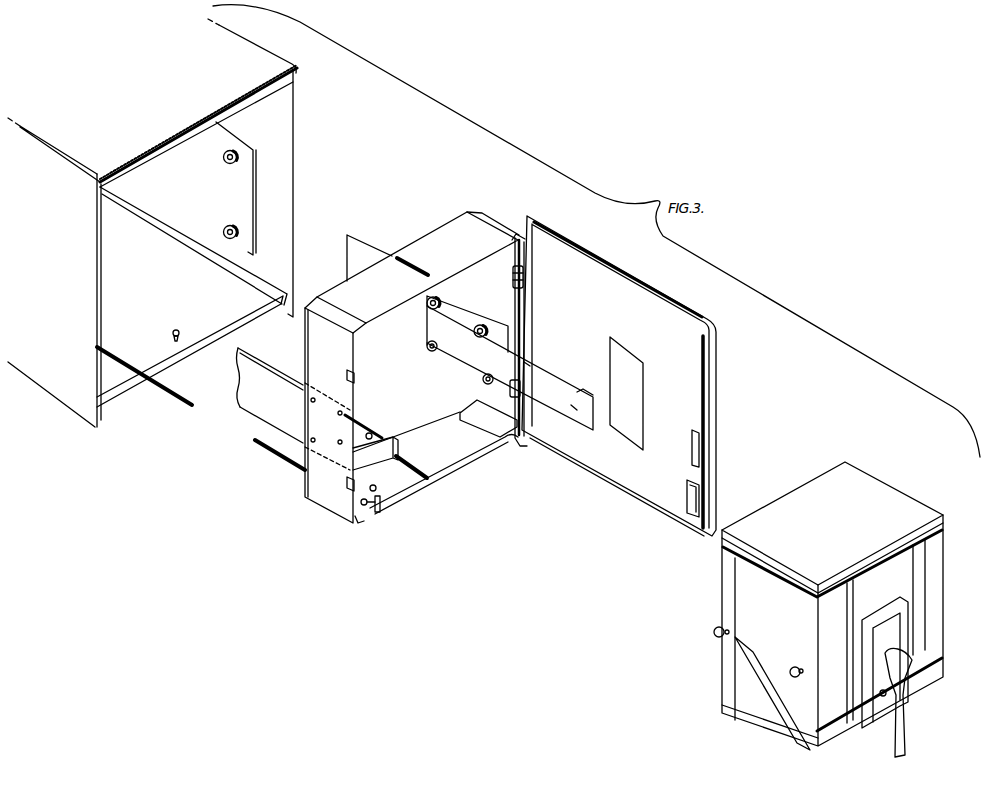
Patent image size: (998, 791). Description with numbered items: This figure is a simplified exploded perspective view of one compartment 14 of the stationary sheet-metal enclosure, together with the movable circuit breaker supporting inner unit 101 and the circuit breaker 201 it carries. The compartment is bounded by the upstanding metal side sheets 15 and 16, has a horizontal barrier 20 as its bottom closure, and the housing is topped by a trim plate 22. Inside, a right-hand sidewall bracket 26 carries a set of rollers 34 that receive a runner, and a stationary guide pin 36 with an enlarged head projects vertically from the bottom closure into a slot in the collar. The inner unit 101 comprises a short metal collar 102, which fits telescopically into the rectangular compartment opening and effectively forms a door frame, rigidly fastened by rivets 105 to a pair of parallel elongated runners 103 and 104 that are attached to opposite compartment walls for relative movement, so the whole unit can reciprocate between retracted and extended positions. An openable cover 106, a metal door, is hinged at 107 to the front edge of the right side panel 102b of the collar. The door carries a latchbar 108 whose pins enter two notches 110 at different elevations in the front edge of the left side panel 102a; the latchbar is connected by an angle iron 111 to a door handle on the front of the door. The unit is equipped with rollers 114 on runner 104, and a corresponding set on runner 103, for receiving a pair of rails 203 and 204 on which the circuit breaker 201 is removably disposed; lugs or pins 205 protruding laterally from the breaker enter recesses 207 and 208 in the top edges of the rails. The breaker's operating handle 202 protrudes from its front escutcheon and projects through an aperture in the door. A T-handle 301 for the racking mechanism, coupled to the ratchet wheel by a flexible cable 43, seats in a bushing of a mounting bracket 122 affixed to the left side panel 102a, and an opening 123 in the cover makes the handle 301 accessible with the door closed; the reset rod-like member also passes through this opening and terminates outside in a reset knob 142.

The compartment 14 is at (150, 265).
The side sheet 15 is at (50, 378).
The side sheet 16 is at (294, 131).
The horizontal barrier 20 is at (248, 308).
The trim plate 22 is at (248, 53).
The right-hand sidewall bracket 26 is at (245, 183).
The rollers 34 is at (229, 225).
The guide pin 36 is at (178, 329).
The flexible cable 43 is at (143, 379).
The inner unit 101 is at (520, 479).
The collar 102 is at (423, 240).
The left side panel 102a is at (315, 496).
The right side panel 102b is at (513, 307).
The runner 103 is at (247, 408).
The runner 104 is at (357, 240).
The rivets 105 is at (338, 440).
The cover 106 is at (717, 348).
The hinge 107 is at (525, 282).
The latchbar 108 is at (700, 382).
The notches 110 is at (347, 374).
The angle iron 111 is at (692, 443).
The rollers 114 is at (483, 322).
The mounting bracket 122 is at (362, 518).
The opening 123 is at (688, 496).
The reset knob 142 is at (377, 488).
The circuit breaker 201 is at (945, 550).
The operating handle 202 is at (910, 703).
The rail 203 is at (390, 440).
The rail 204 is at (565, 387).
The lugs or pins 205 is at (790, 670).
The recesses 207 is at (372, 434).
The recesses 208 is at (527, 367).
The T-handle 301 is at (387, 504).